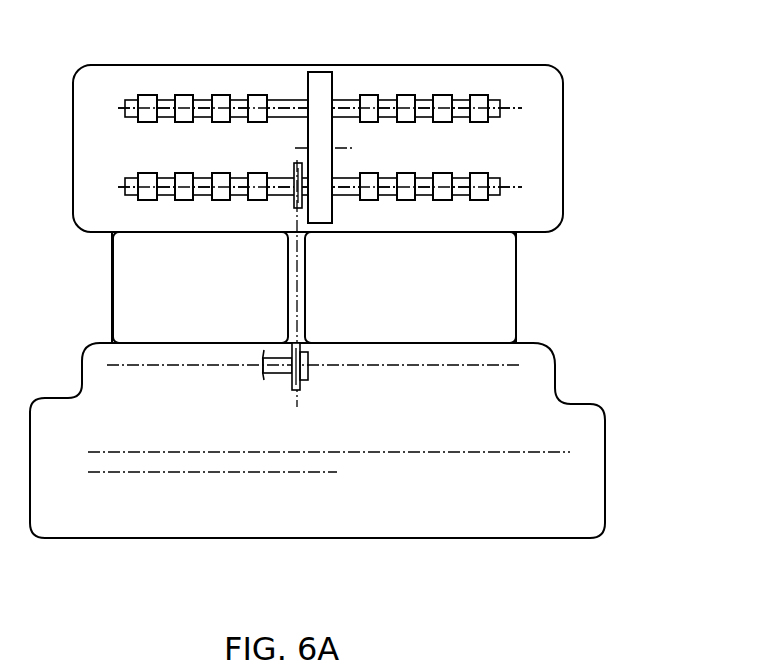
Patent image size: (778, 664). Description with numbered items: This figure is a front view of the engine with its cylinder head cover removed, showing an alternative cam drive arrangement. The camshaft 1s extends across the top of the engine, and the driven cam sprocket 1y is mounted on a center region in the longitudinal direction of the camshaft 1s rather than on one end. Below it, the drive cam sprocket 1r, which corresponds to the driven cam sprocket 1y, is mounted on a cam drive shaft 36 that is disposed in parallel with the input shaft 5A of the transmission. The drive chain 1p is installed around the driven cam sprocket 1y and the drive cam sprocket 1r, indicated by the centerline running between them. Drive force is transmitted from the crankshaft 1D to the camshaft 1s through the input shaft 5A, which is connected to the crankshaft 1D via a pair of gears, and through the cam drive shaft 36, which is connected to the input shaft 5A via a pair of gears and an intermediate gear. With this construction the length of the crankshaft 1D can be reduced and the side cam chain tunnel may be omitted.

The camshaft 1s is at (284, 177).
The driven cam sprocket 1y is at (293, 205).
The drive chain 1p is at (290, 301).
The drive cam sprocket 1r is at (303, 386).
The input shaft 5A is at (142, 470).
The cam drive shaft 36 is at (280, 370).
The crankshaft 1D is at (483, 452).